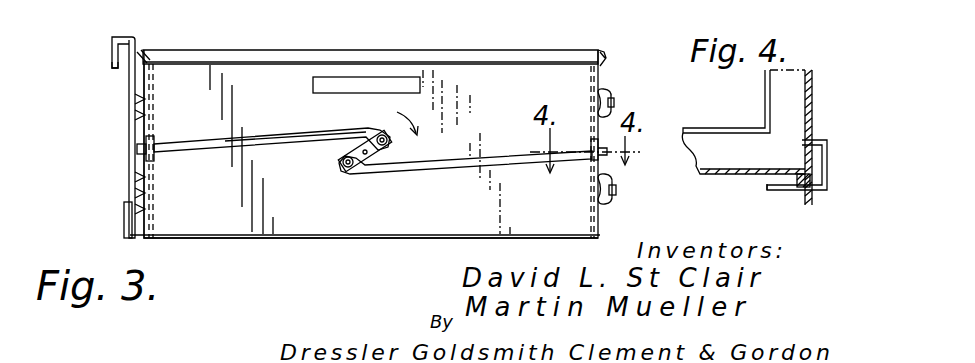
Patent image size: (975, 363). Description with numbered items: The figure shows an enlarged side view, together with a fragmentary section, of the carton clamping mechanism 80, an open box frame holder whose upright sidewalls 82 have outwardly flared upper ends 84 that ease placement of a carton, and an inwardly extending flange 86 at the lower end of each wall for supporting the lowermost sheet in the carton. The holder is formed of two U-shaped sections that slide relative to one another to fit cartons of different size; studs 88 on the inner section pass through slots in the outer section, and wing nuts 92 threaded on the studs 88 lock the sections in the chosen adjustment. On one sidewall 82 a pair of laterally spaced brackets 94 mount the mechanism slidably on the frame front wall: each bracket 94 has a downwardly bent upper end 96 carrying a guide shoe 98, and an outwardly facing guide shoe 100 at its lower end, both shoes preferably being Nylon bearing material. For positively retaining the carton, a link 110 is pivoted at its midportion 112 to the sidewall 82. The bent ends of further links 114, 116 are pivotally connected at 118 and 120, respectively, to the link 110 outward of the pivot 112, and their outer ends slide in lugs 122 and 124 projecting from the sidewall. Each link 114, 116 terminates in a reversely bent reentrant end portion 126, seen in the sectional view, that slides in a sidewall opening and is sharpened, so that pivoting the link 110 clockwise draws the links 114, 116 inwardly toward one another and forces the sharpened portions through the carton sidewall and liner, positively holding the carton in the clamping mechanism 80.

In FIG. 3, the carton clamping mechanism 80 is at (503, 23).
In FIG. 3, the upright sidewall 82 is at (392, 223).
In FIG. 4, the upright sidewall 82 is at (814, 89).
In FIG. 3, the outwardly flared upper end 84 is at (348, 57).
In FIG. 4, the inwardly extending flange 86 is at (766, 96).
In FIG. 3, the stud 88 is at (616, 102).
In FIG. 3, the wing nut 92 is at (608, 91).
In FIG. 3, the bracket 94 is at (128, 128).
In FIG. 3, the downwardly bent upper end 96 is at (111, 47).
In FIG. 3, the guide shoe 98 is at (117, 72).
In FIG. 3, the guide shoe 100 is at (125, 218).
In FIG. 3, the link 110 is at (394, 146).
In FIG. 3, the pivot 112 is at (346, 157).
In FIG. 3, the link 114 is at (222, 152).
In FIG. 3, the link 116 is at (468, 165).
In FIG. 4, the link 116 is at (784, 182).
In FIG. 3, the pivot 118 is at (383, 127).
In FIG. 3, the pivot 120 is at (343, 166).
In FIG. 3, the lug 122 is at (155, 138).
In FIG. 3, the lug 124 is at (590, 160).
In FIG. 4, the lug 124 is at (803, 202).
In FIG. 4, the reversely bent reentrant end portion 126 is at (823, 140).